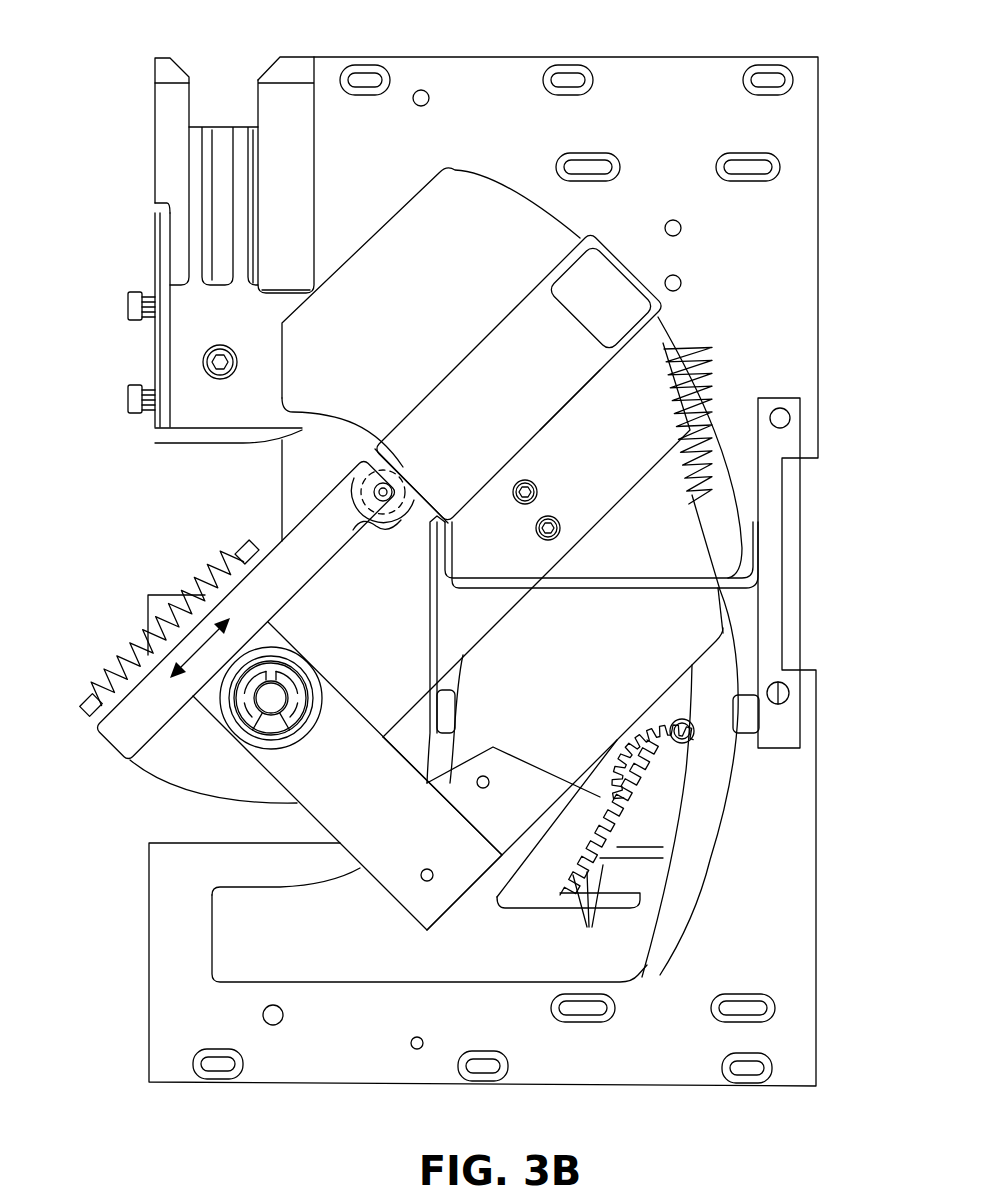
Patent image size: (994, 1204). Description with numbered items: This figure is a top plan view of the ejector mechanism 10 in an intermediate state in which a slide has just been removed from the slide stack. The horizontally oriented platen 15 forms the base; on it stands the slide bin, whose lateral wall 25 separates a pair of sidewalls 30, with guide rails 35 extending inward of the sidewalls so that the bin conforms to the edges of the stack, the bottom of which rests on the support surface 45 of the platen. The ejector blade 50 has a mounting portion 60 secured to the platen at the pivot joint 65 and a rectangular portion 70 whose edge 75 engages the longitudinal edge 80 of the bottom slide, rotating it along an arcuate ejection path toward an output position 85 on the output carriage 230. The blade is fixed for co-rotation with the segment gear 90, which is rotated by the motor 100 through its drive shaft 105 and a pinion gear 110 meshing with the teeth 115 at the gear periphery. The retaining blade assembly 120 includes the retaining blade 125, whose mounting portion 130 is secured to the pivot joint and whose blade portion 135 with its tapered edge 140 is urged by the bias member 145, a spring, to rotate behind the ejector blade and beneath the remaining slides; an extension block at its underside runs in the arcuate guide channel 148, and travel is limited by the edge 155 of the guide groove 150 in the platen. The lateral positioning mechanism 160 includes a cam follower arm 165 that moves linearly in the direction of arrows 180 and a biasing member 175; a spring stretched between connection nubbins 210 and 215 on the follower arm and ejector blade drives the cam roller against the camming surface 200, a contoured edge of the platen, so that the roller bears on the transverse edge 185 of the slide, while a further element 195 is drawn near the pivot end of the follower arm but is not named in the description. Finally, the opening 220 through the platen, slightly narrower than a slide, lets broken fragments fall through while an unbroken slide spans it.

The ejector mechanism 10 is at (131, 96).
The platen 15 is at (807, 305).
The lateral wall 25 is at (638, 588).
The sidewalls 30 is at (775, 618).
The guide rails 35 is at (447, 742).
The support surface 45 is at (707, 330).
The ejector blade 50 is at (230, 807).
The mounting portion 60 is at (244, 784).
The pivot joint 65 is at (278, 704).
The rectangular portion 70 is at (592, 481).
The edge 75 is at (570, 405).
The longitudinal edge 80 is at (595, 378).
The output position 85 is at (188, 193).
The segment gear 90 is at (552, 878).
The motor 100 is at (663, 832).
The drive shaft 105 is at (687, 737).
The pinion gear 110 is at (678, 770).
The teeth 115 is at (588, 911).
The retaining blade assembly 120 is at (362, 908).
The retaining blade 125 is at (466, 902).
The mounting portion 130 is at (401, 845).
The blade portion 135 is at (628, 707).
The tapered edge 140 is at (523, 593).
The bias member 145 is at (700, 385).
The arcuate guide channel 148 is at (648, 879).
The guide groove 150 is at (266, 925).
The edge 155 is at (465, 658).
The lateral positioning mechanism 160 is at (185, 545).
The cam follower arm 165 is at (273, 593).
The biasing member 175 is at (120, 692).
The arrows 180 is at (198, 658).
The transverse edge 185 is at (405, 487).
The pivot pin 195 is at (370, 496).
The camming surface 200 is at (283, 435).
The connection nubbin 210 is at (86, 700).
The connection nubbin 215 is at (240, 548).
The opening 220 is at (443, 295).
The output carriage 230 is at (156, 148).